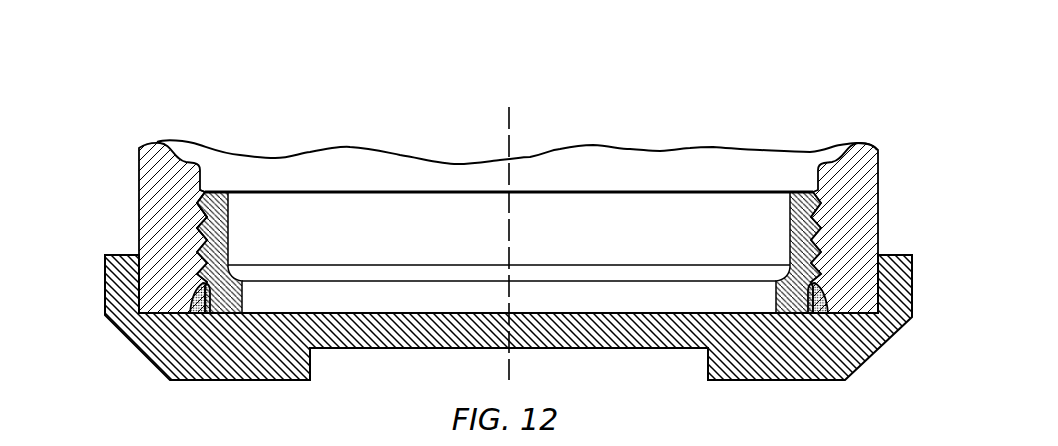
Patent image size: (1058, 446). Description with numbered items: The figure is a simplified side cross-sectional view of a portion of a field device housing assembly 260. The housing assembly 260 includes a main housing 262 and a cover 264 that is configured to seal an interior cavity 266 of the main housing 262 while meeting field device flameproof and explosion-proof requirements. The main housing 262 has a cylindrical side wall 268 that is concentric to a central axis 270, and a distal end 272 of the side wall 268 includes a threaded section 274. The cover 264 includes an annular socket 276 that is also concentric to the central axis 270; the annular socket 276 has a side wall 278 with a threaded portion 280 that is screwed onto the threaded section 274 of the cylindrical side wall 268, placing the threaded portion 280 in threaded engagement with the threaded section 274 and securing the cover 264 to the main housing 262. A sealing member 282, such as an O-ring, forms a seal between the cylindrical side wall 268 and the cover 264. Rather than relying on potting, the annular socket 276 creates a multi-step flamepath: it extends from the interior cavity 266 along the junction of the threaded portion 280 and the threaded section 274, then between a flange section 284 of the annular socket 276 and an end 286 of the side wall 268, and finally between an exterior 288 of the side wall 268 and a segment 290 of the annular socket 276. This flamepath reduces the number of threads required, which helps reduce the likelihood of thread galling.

The field device housing assembly 260 is at (151, 76).
The main housing 262 is at (878, 178).
The cover 264 is at (268, 368).
The interior cavity 266 is at (351, 151).
The cylindrical side wall 268 is at (148, 168).
The central axis 270 is at (508, 126).
The distal end 272 is at (856, 300).
The threaded section 274 is at (218, 238).
The annular socket 276 is at (150, 250).
The side wall 278 is at (790, 233).
The threaded portion 280 is at (188, 215).
The sealing member 282 is at (207, 313).
The flange section 284 is at (151, 300).
The end 286 is at (166, 327).
The exterior 288 is at (895, 282).
The segment 290 is at (912, 255).